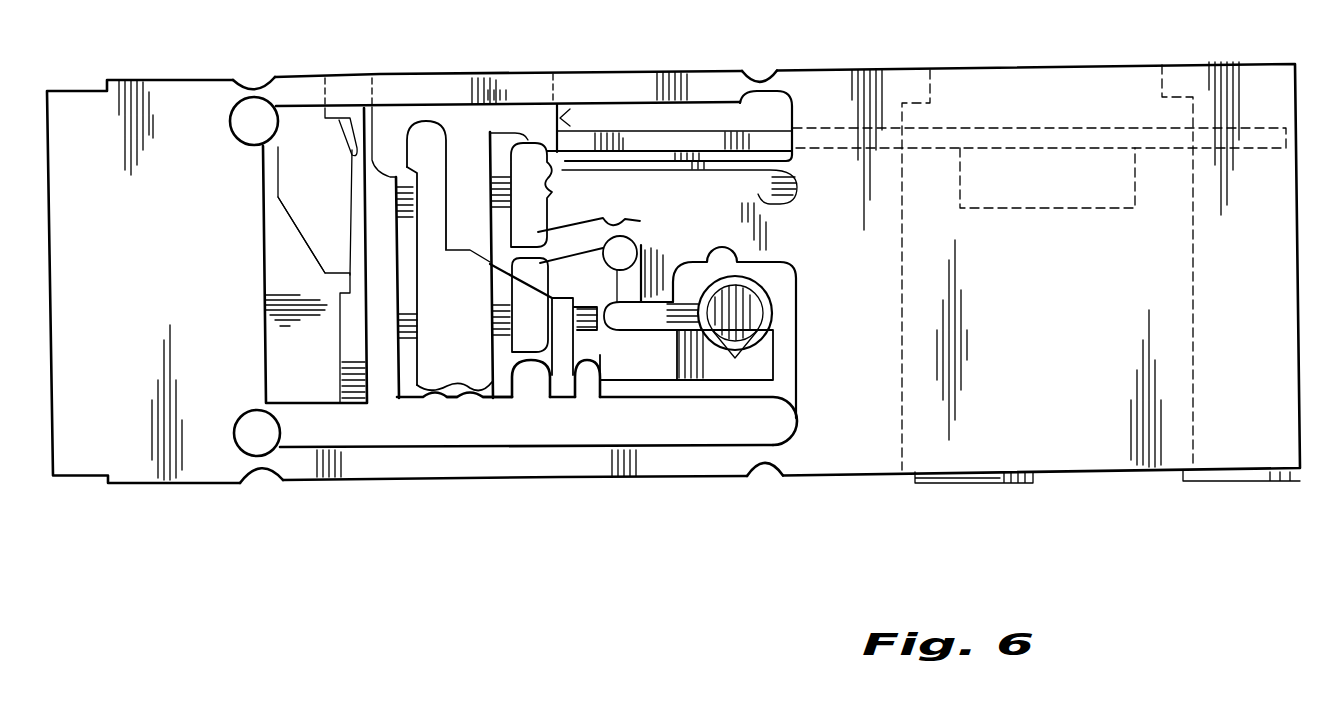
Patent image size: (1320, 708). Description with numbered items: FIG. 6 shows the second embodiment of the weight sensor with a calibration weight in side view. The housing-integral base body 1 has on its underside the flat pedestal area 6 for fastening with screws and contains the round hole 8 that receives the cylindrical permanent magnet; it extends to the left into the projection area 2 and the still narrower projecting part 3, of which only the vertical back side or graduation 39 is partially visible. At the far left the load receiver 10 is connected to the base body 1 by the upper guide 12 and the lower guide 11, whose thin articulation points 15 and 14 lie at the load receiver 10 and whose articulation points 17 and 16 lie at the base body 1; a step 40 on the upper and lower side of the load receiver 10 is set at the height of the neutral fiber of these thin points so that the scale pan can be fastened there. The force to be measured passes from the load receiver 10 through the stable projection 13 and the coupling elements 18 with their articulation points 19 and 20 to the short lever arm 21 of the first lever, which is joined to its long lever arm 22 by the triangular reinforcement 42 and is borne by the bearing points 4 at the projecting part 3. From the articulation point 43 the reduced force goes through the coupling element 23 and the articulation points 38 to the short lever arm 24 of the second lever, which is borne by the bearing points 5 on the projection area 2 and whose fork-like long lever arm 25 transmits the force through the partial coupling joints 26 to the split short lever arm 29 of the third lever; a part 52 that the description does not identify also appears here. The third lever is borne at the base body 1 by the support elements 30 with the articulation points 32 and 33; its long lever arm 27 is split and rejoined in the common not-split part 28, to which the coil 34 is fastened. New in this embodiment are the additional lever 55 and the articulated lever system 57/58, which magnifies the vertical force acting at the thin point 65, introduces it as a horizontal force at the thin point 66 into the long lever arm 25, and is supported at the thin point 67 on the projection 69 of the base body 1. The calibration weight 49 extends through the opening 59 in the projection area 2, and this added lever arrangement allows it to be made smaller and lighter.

The base body 1 is at (1085, 453).
The projection area 2 is at (588, 392).
The projecting part 3 is at (438, 113).
The bearing points 4 is at (425, 127).
The bearing points 5 is at (532, 361).
The flat pedestal area 6 is at (967, 477).
The round hole 8 is at (920, 292).
The load receiver 10 is at (142, 470).
The lower guide 11 is at (683, 460).
The upper guide 12 is at (692, 83).
The stable projection 13 is at (283, 370).
The articulation point 14 is at (262, 470).
The articulation point 15 is at (257, 90).
The articulation point 16 is at (762, 462).
The articulation point 17 is at (765, 82).
The coupling elements 18 is at (355, 190).
The articulation point 19 is at (353, 263).
The articulation point 20 is at (352, 150).
The short lever arm 21 is at (355, 117).
The long lever arm 22 is at (410, 293).
The coupling element 23 is at (457, 398).
The short lever arm 24 is at (512, 398).
The long lever arm 25 is at (512, 232).
The partial coupling joints 26 is at (527, 138).
The long lever arm 27 is at (628, 143).
The not-split part 28 is at (993, 137).
The split short lever arm 29 is at (548, 196).
The support elements 30 is at (648, 160).
The articulation points 32 is at (578, 150).
The articulation points 33 is at (788, 128).
The coil 34 is at (1107, 197).
The articulation points 38 is at (480, 384).
The graduation 39 is at (565, 110).
The step 40 is at (73, 90).
The triangular reinforcement 42 is at (333, 125).
The articulation point 43 is at (435, 392).
The calibration weight 49 is at (757, 322).
The web 52 is at (562, 392).
The additional lever 55 is at (680, 373).
The articulated lever system 57 is at (645, 242).
The articulated lever system 58 is at (572, 240).
The opening 59 is at (772, 292).
The thin point 65 is at (627, 320).
The thin point 66 is at (530, 258).
The thin point 67 is at (722, 235).
The projection 69 is at (768, 237).